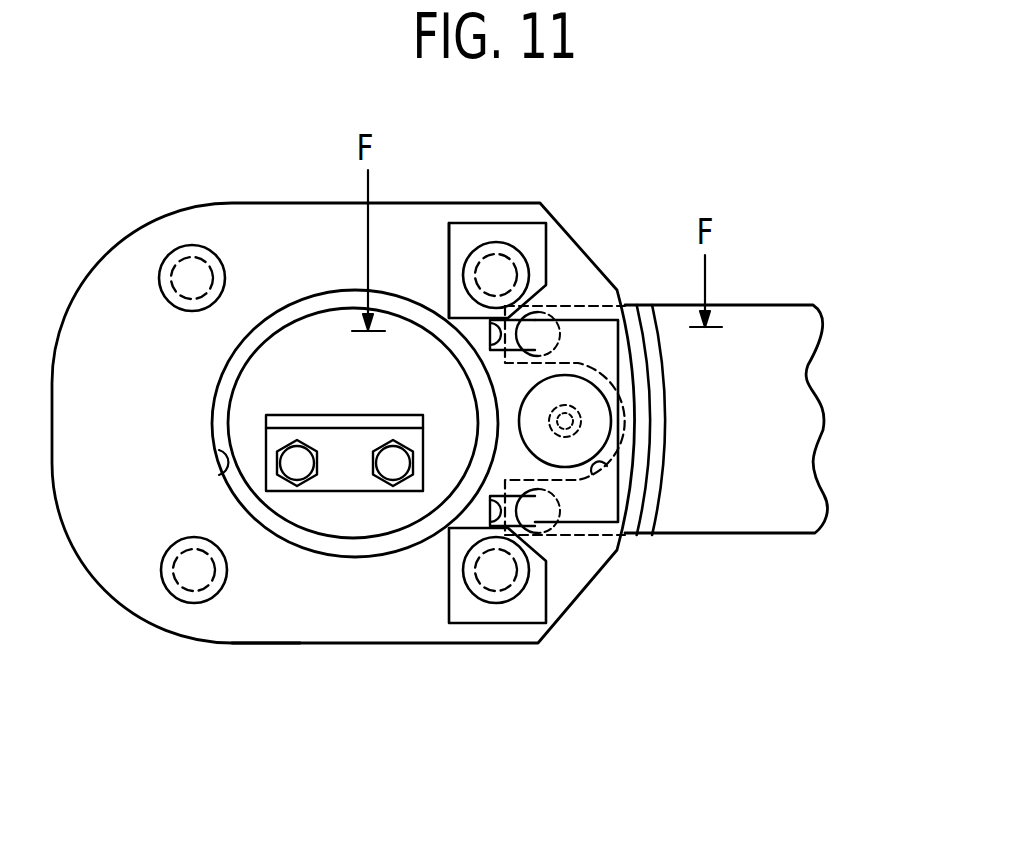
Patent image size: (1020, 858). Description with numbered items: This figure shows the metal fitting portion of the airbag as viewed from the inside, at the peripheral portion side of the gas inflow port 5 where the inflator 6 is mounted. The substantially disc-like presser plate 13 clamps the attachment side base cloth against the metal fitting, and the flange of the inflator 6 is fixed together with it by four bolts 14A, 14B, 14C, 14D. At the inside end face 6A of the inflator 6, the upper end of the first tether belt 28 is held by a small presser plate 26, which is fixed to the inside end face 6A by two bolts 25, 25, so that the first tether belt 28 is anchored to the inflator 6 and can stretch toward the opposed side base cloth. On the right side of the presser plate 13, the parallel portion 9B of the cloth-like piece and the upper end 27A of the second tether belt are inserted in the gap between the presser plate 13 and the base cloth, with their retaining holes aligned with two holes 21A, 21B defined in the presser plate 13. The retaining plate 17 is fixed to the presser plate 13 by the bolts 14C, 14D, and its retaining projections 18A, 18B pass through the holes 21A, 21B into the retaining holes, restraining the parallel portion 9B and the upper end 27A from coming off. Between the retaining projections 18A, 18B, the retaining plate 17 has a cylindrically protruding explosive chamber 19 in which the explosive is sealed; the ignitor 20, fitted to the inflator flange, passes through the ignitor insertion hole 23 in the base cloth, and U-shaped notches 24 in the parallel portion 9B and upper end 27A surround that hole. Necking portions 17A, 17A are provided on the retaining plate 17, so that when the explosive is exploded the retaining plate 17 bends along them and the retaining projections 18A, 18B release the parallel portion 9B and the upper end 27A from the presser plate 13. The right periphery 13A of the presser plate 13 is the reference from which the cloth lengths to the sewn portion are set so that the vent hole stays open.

The gas inflow port 5 is at (221, 466).
The inflator 6 is at (373, 520).
The inside end face of the inflator 6A is at (270, 382).
The parallel portion 9B is at (797, 305).
The presser plate 13 is at (247, 632).
The right periphery of the presser plate 13A is at (545, 530).
The bolt 14A is at (193, 602).
The bolt 14B is at (193, 246).
The bolt 14C is at (497, 243).
The bolt 14D is at (498, 595).
The retaining plate 17 is at (530, 236).
The necking portion 17A is at (450, 300).
The retaining projection 18A is at (540, 512).
The retaining projection 18B is at (541, 333).
The explosive chamber 19 is at (587, 443).
The ignitor 20 is at (567, 421).
The hole in the presser plate 21A is at (538, 510).
The hole in the presser plate 21B is at (546, 322).
The ignitor insertion hole 23 is at (582, 416).
The U-shaped notch 24 is at (600, 478).
The bolt 25 is at (298, 462).
The presser plate 26 is at (345, 472).
The upper end of the second tether belt 27A is at (655, 472).
The first tether belt 28 is at (312, 415).